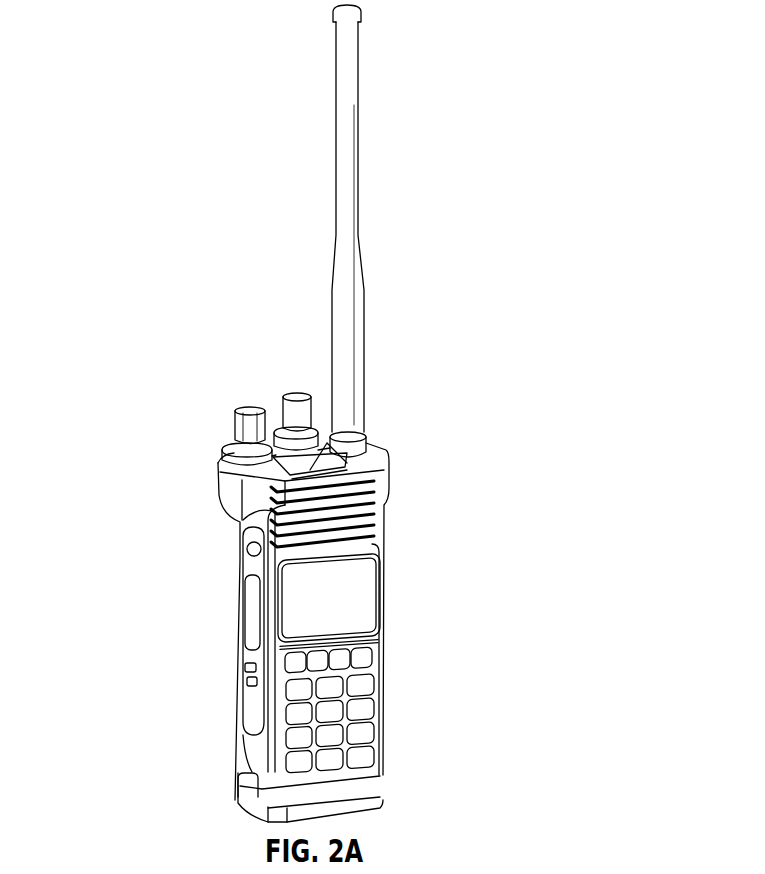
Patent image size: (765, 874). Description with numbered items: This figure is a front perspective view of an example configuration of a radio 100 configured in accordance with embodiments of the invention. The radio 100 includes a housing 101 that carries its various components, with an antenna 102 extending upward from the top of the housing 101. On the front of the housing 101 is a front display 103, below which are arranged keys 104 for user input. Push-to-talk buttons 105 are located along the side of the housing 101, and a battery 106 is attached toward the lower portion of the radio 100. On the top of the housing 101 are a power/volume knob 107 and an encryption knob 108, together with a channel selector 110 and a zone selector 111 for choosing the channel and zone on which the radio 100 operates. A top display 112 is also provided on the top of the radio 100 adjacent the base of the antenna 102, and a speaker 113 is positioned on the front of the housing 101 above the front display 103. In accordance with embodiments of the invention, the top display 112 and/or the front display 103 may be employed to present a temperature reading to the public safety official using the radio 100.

The radio 100 is at (642, 38).
The housing 101 is at (110, 545).
The antenna 102 is at (366, 160).
The front display 103 is at (363, 580).
The keys 104 is at (398, 725).
The push-to-talk buttons 105 is at (225, 621).
The battery 106 is at (225, 755).
The power/volume knob 107 is at (236, 424).
The encryption knob 108 is at (224, 452).
The channel selector 110 is at (297, 397).
The zone selector 111 is at (280, 437).
The top display 112 is at (360, 438).
The speaker 113 is at (380, 533).